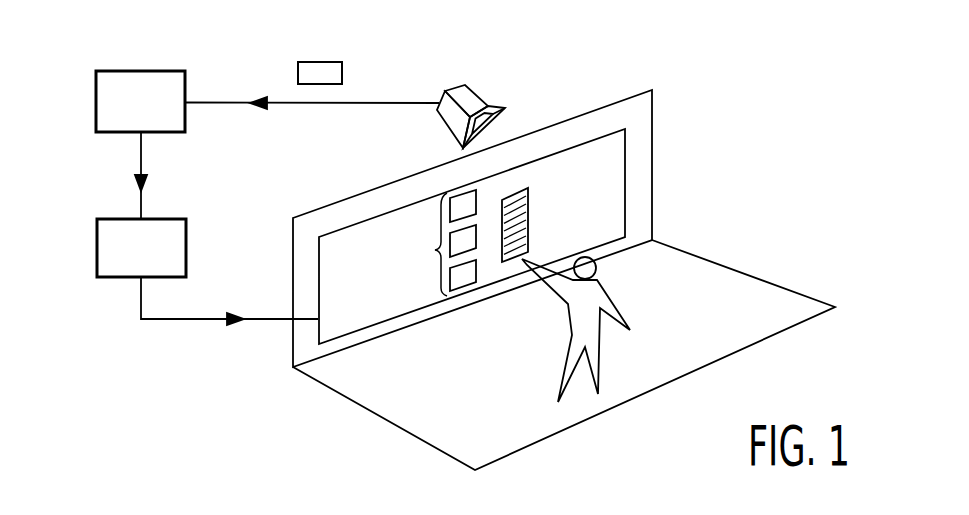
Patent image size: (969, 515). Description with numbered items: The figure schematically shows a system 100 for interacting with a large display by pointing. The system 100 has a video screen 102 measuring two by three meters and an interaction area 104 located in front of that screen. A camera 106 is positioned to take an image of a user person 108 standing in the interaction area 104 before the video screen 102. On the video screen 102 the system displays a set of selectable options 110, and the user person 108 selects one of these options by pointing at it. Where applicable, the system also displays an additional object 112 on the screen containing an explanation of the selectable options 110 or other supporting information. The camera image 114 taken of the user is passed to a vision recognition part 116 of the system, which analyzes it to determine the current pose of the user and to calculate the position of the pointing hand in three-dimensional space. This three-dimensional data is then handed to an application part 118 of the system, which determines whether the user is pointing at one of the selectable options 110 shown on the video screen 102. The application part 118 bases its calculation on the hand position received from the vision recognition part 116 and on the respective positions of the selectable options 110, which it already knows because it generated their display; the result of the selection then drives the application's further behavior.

The system 100 is at (262, 475).
The video screen 102 is at (625, 170).
The interaction area 104 is at (782, 307).
The camera 106 is at (473, 88).
The user person 108 is at (567, 318).
The selectable options 110 is at (440, 243).
The additional object 112 is at (528, 213).
The camera image 114 is at (322, 60).
The vision recognition part 116 is at (143, 70).
The application part 118 is at (115, 280).